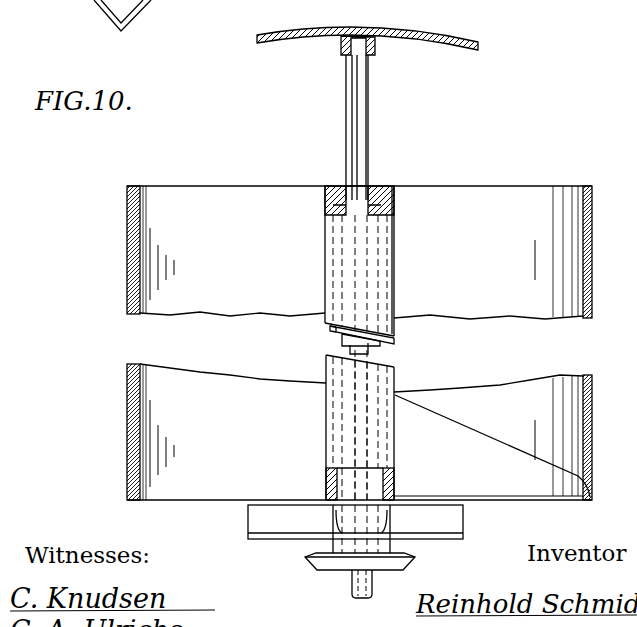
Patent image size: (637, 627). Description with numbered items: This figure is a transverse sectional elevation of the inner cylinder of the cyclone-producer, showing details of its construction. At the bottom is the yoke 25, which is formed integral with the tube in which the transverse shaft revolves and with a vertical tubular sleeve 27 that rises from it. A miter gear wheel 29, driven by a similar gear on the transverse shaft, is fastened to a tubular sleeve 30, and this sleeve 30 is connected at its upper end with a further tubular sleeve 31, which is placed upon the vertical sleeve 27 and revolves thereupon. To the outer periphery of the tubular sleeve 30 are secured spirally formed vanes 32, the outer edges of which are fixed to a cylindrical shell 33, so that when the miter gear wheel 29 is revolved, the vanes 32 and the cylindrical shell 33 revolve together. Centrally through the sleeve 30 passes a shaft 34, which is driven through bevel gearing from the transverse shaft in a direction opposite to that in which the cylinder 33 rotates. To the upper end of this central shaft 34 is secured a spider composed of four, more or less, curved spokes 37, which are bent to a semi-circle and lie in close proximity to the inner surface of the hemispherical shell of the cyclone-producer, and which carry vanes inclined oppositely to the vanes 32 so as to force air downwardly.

The yoke 25 is at (355, 529).
The vertical tubular sleeve 27 is at (393, 340).
The miter gear wheel 29 is at (371, 575).
The tubular sleeve 30 is at (383, 347).
The tubular sleeve 31 is at (320, 334).
The spirally formed vanes 32 is at (492, 446).
The cylindrical shell 33 is at (130, 239).
The shaft 34 is at (315, 352).
The curved spokes 37 is at (400, 29).